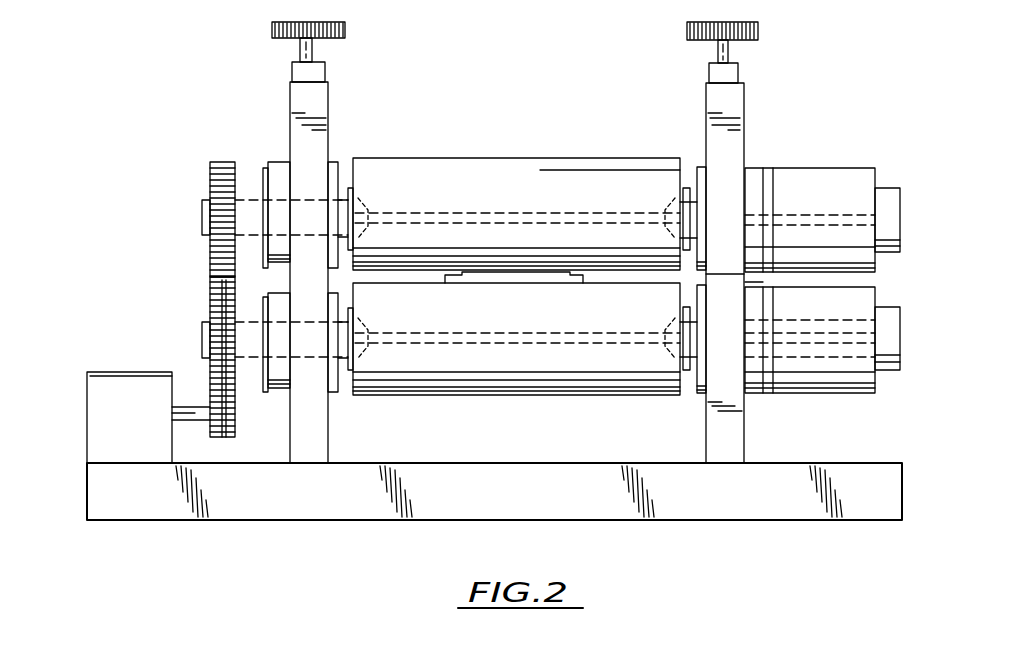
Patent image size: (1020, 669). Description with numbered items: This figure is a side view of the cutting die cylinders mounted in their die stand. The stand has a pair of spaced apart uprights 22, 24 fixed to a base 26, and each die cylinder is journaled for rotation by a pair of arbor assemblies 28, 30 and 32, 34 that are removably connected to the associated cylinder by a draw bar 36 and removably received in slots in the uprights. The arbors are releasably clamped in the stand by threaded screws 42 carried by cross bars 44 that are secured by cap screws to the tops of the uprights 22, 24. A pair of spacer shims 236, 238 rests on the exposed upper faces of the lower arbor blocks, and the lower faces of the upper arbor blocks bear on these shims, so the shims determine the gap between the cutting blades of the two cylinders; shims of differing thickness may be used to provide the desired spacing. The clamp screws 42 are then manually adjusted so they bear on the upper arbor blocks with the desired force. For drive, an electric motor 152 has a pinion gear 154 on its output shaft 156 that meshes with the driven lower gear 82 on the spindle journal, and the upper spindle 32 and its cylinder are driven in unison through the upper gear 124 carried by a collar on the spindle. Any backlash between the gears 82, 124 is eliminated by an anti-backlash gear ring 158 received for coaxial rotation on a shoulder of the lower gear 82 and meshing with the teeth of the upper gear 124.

The upright 22 is at (290, 105).
The upright 24 is at (744, 100).
The base 26 is at (313, 519).
The arbor assembly 28 is at (200, 330).
The arbor assembly 30 is at (880, 293).
The arbor assembly 32 is at (200, 200).
The arbor assembly 34 is at (880, 172).
The draw bar 36 is at (428, 213).
The threaded screw 42 is at (302, 50).
The cross bar 44 is at (292, 72).
The gear 82 is at (208, 290).
The gear 124 is at (210, 165).
The electric motor 152 is at (93, 372).
The pinion gear 154 is at (212, 397).
The output shaft 156 is at (187, 423).
The anti-backlash gear ring 158 is at (236, 382).
The spacer shim 236 is at (270, 272).
The spacer shim 238 is at (763, 282).